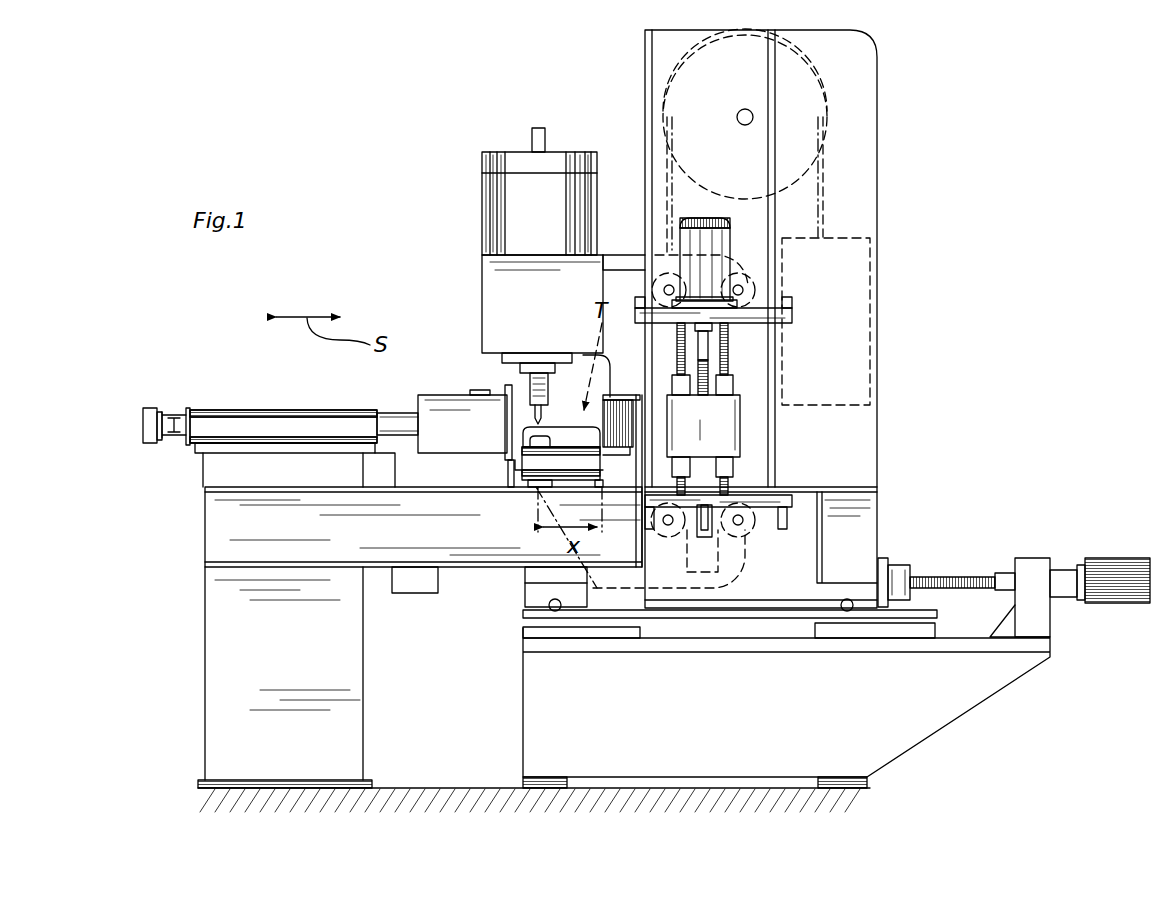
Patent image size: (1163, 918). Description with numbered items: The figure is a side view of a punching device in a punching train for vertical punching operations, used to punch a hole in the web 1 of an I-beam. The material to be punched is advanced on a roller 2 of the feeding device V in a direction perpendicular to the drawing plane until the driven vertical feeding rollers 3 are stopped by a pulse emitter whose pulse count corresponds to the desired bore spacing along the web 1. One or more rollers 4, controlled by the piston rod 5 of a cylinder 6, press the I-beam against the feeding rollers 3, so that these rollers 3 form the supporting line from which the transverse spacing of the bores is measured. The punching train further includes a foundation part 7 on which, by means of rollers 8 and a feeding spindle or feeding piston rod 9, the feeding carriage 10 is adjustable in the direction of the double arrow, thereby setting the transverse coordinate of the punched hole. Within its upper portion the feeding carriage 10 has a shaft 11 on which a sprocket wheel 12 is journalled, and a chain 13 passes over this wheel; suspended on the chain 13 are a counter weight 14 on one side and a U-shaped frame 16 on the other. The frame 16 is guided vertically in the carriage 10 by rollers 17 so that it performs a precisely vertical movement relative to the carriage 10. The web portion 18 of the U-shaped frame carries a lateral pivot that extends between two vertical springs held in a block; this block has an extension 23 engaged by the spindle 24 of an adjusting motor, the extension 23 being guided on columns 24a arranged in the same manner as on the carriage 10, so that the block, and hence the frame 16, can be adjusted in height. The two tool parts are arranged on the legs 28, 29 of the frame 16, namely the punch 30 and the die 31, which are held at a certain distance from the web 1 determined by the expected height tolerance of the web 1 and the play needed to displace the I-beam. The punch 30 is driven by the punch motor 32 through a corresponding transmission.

The web 1 is at (571, 425).
The roller 2 is at (537, 470).
The vertical feeding rollers 3 is at (618, 456).
The rollers 4 is at (505, 430).
The piston rod 5 is at (406, 412).
The cylinder 6 is at (262, 420).
The foundation part 7 is at (945, 718).
The rollers 8 is at (560, 616).
The feeding spindle or feeding piston rod 9 is at (963, 577).
The feeding carriage 10 is at (867, 447).
The shaft 11 is at (737, 115).
The sprocket wheel 12 is at (808, 103).
The chain 13 is at (826, 196).
The counter weight 14 is at (858, 279).
The U-shaped frame 16 is at (478, 291).
The rollers 17 is at (752, 287).
The web portion 18 is at (739, 367).
The extension 23 is at (733, 433).
The spindle 24 is at (709, 348).
The columns 24a is at (688, 486).
The leg 28 is at (590, 270).
The leg 29 is at (692, 586).
The punch 30 is at (534, 410).
The die 31 is at (535, 466).
The punch motor 32 is at (493, 197).
The feeding device V is at (452, 572).